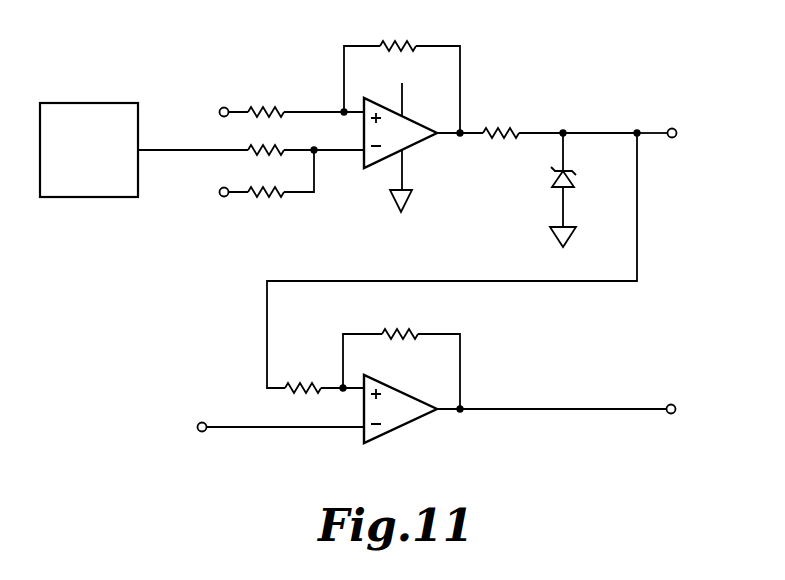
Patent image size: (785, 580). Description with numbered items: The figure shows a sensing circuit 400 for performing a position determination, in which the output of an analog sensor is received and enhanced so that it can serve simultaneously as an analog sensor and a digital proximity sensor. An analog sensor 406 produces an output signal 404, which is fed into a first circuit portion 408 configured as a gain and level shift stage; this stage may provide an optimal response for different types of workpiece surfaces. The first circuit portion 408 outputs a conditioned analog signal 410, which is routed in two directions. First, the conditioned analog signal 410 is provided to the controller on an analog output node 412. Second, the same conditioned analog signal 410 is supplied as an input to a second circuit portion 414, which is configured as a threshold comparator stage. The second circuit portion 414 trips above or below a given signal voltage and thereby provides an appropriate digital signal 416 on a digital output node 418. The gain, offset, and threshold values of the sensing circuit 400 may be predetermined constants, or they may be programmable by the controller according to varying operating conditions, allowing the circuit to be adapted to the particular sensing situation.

The sensing circuit 400 is at (690, 64).
The output signal 404 is at (160, 148).
The analog sensor 406 is at (67, 103).
The first circuit portion 408 is at (279, 67).
The conditioned analog signal 410 is at (596, 133).
The analog output node 412 is at (678, 138).
The second circuit portion 414 is at (226, 304).
The digital signal 416 is at (557, 410).
The digital output node 418 is at (677, 414).